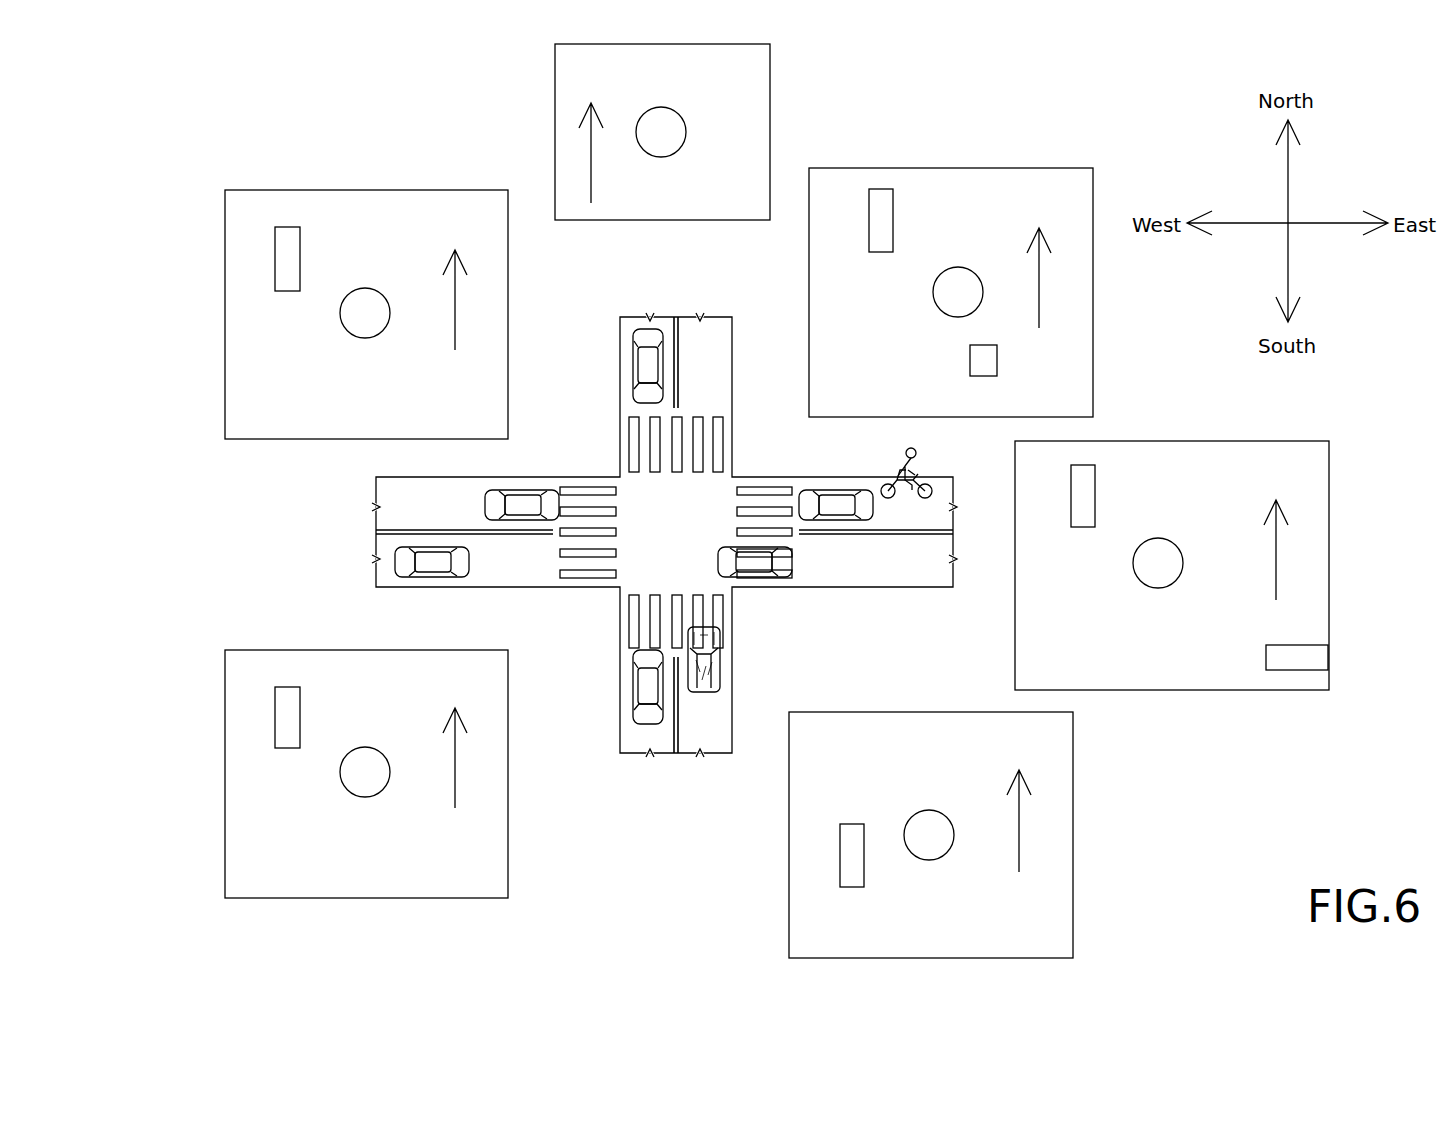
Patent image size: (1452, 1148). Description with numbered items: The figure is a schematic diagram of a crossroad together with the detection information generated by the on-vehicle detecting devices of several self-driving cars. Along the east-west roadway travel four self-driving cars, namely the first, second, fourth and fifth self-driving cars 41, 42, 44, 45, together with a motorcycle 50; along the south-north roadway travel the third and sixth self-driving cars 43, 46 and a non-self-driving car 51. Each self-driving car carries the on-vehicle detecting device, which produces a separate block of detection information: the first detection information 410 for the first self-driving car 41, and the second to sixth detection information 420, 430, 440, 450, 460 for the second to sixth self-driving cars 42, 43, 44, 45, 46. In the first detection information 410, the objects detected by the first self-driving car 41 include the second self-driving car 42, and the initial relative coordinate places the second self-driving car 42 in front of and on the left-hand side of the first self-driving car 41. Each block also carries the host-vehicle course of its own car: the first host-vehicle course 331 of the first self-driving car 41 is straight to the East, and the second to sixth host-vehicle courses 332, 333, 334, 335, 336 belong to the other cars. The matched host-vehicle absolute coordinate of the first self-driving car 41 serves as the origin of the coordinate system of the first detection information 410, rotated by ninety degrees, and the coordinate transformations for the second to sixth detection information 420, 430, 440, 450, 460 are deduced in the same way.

The first self-driving car 41 is at (432, 565).
The second self-driving car 42 is at (528, 500).
The third self-driving car 43 is at (650, 345).
The fourth self-driving car 44 is at (818, 497).
The fifth self-driving car 45 is at (772, 570).
The sixth self-driving car 46 is at (640, 708).
The motorcycle 50 is at (915, 465).
The non-self-driving car 51 is at (715, 675).
The first host-vehicle course 331 is at (473, 770).
The second host-vehicle course 332 is at (474, 302).
The third host-vehicle course 333 is at (578, 152).
The fourth host-vehicle course 334 is at (1055, 282).
The fifth host-vehicle course 335 is at (1290, 565).
The sixth host-vehicle course 336 is at (1034, 833).
The first detection information 410 is at (225, 720).
The second detection information 420 is at (410, 190).
The third detection information 430 is at (770, 120).
The fourth detection information 440 is at (960, 168).
The fifth detection information 450 is at (1329, 502).
The sixth detection information 460 is at (1073, 795).